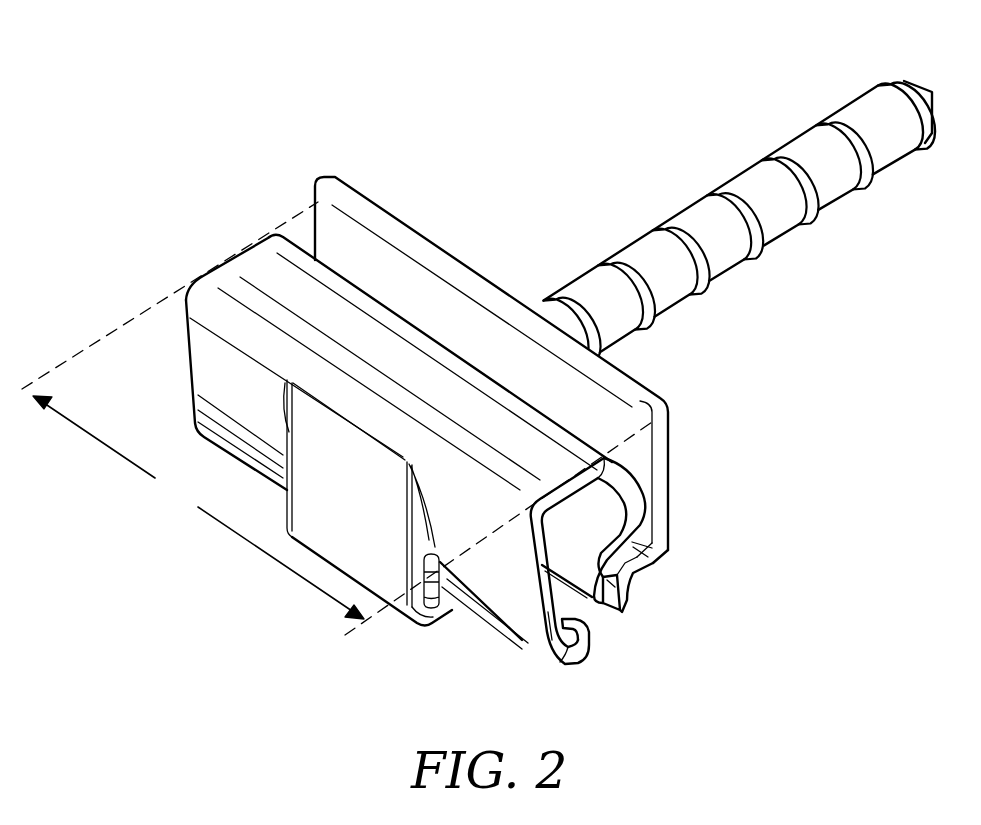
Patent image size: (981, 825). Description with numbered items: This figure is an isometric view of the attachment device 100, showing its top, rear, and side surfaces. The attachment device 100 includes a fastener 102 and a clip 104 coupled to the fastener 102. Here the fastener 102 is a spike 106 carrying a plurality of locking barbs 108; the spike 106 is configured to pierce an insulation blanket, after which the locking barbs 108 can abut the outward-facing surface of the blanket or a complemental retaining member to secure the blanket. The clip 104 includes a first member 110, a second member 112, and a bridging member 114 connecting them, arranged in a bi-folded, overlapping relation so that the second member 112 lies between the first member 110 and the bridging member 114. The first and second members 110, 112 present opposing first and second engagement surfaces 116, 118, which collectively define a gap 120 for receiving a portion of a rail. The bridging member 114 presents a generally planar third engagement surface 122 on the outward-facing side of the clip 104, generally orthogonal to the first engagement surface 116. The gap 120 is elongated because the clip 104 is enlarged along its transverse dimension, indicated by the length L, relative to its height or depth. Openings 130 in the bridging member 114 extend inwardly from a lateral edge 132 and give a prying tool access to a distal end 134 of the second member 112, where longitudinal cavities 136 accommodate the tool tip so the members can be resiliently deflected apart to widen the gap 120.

The attachment device 100 is at (664, 59).
The fastener 102 is at (543, 300).
The clip 104 is at (188, 287).
The spike 106 is at (822, 150).
The locking barbs 108 is at (863, 188).
The first member 110 is at (664, 467).
The second member 112 is at (617, 480).
The bridging member 114 is at (535, 608).
The first engagement surface 116 is at (398, 270).
The second engagement surface 118 is at (646, 503).
The gap 120 is at (462, 318).
The third engagement surface 122 is at (232, 312).
The openings 130 is at (576, 620).
The lateral edge 132 is at (570, 650).
The distal end 134 is at (606, 588).
The longitudinal cavities 136 is at (652, 566).
The length L is at (338, 418).